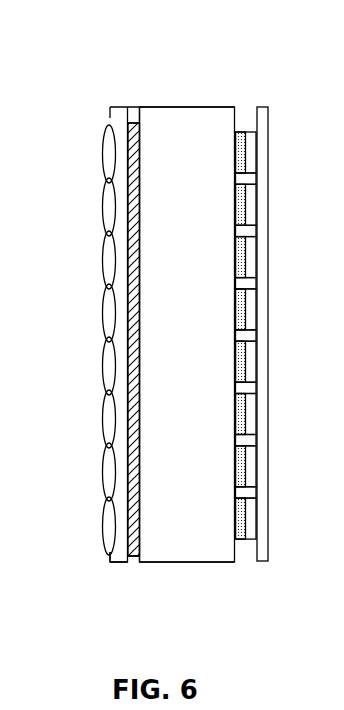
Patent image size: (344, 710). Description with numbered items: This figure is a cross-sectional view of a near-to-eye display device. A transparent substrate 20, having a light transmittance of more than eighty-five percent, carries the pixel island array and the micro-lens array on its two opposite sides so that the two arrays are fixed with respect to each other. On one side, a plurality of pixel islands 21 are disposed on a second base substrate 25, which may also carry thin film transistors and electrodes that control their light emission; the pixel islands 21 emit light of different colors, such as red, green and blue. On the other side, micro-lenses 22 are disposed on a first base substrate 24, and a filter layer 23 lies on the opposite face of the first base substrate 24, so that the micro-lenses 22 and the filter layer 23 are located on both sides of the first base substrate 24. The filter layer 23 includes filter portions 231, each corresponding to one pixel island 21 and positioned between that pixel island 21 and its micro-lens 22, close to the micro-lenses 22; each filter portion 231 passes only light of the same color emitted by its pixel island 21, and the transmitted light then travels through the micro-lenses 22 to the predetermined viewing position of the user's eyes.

The transparent substrate 20 is at (208, 562).
The pixel island 21 is at (248, 128).
The micro-lens 22 is at (98, 160).
The filter layer 23 is at (165, 298).
The filter portion 231 is at (142, 132).
The first base substrate 24 is at (123, 562).
The second base substrate 25 is at (265, 562).